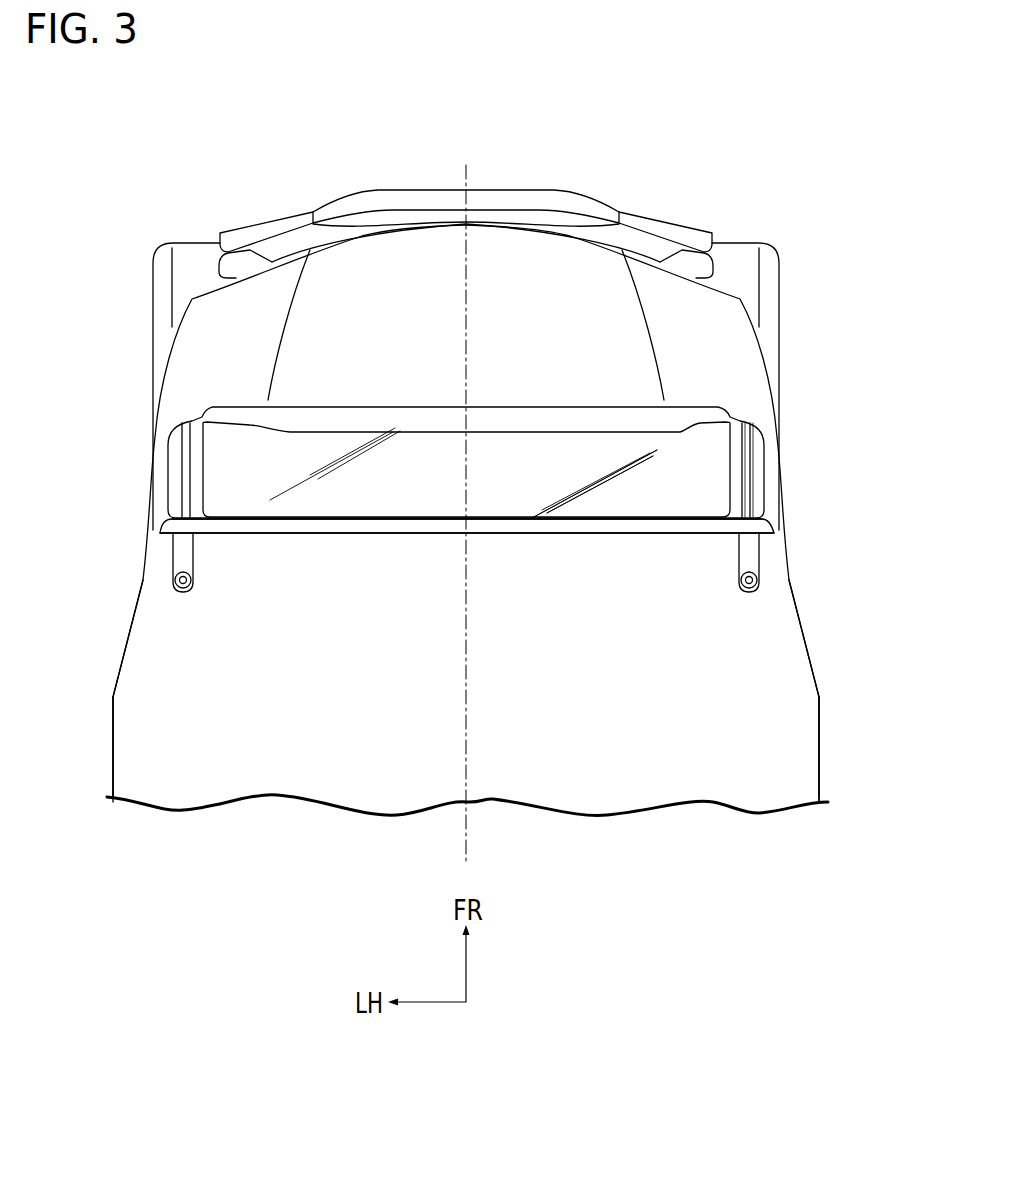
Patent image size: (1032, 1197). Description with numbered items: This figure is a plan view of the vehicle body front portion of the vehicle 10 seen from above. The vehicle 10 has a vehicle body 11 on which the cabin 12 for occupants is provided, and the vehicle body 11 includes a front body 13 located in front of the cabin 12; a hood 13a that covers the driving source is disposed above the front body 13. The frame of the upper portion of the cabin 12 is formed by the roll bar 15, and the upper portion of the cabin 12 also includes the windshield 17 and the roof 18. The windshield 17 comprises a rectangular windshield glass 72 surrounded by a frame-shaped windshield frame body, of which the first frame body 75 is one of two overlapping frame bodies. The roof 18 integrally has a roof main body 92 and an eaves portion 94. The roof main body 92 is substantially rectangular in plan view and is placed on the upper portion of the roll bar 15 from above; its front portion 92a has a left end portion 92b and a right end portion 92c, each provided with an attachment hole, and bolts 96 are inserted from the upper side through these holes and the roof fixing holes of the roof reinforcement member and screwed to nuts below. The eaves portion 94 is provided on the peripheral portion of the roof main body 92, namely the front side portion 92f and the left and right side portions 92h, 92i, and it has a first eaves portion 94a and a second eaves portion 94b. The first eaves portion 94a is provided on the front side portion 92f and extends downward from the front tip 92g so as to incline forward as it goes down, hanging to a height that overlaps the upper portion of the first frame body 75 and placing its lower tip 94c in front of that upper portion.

The vehicle 10 is at (155, 157).
The vehicle body 11 is at (197, 337).
The cabin 12 is at (820, 673).
The front body 13 is at (727, 290).
The hood 13a is at (720, 333).
The roll bar 15 is at (165, 478).
The windshield 17 is at (880, 378).
The roof 18 is at (557, 140).
The windshield glass 72 is at (720, 457).
The first frame body 75 is at (737, 485).
The roof main body 92 is at (348, 553).
The front portion 92a is at (450, 582).
The left end portion 92b is at (178, 600).
The right end portion 92c is at (742, 598).
The front side portion 92f is at (527, 540).
The front tip 92g is at (400, 533).
The left side portion 92h is at (137, 763).
The right side portion 92i is at (795, 777).
The eaves portion 94 is at (488, 515).
The first eaves portion 94a is at (562, 527).
The second eaves portion 94b is at (113, 745).
The lower tip 94c is at (640, 517).
The bolt 96 is at (177, 577).